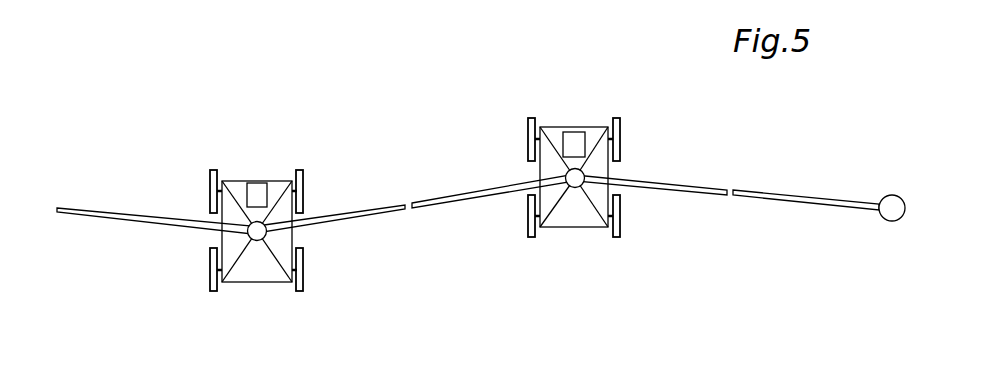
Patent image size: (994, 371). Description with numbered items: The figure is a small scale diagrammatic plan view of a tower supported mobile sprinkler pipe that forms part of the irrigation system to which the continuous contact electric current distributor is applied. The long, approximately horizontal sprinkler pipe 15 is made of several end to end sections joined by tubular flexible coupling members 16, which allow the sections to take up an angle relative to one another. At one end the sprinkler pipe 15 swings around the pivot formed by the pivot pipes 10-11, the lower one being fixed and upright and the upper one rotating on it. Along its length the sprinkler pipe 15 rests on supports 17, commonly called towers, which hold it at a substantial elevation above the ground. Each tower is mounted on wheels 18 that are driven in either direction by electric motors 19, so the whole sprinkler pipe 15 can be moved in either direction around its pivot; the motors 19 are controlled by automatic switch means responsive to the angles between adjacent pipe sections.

The pivot pipes 10-11 is at (880, 196).
The sprinkler pipe 15 is at (112, 213).
The tubular flexible coupling member 16 is at (259, 240).
The support 17 is at (243, 283).
The wheel 18 is at (211, 172).
The electric motor 19 is at (256, 183).